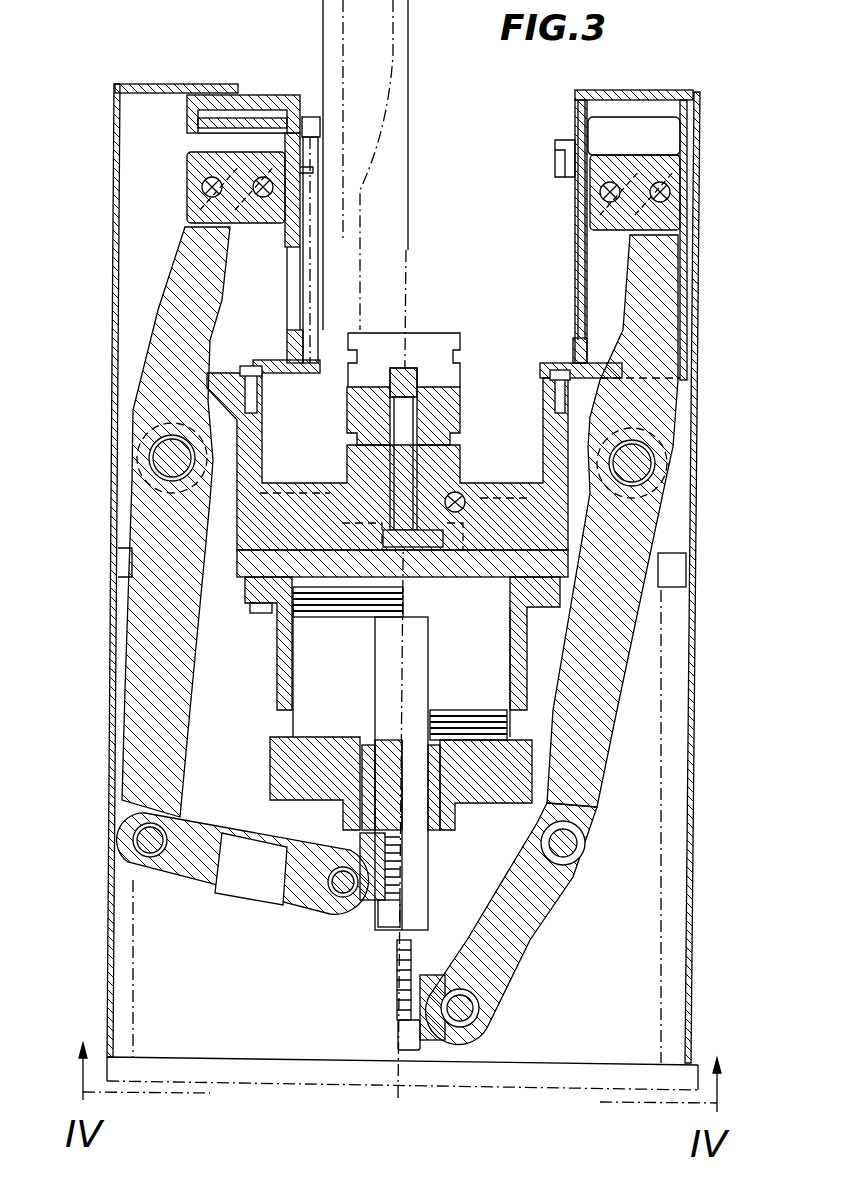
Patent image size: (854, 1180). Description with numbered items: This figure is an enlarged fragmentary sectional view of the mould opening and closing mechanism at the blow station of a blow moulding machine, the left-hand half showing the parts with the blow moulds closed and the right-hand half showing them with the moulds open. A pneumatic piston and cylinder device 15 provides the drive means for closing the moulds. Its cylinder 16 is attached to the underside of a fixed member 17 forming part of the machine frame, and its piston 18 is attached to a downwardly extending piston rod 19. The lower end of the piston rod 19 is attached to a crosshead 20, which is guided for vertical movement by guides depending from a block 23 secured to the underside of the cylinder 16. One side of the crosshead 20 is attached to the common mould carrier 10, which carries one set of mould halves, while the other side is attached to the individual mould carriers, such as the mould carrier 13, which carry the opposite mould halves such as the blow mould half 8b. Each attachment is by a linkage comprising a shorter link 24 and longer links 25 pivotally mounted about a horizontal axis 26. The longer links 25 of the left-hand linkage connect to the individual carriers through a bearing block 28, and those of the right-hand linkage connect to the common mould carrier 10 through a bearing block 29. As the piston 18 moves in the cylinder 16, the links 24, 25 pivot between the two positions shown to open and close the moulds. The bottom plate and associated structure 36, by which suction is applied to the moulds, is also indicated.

The blow mould half 8b is at (355, 44).
The common mould carrier 10 is at (578, 196).
The mould carrier 13 is at (297, 213).
The pneumatic piston and cylinder device 15 is at (275, 665).
The cylinder 16 is at (280, 690).
The fixed member 17 is at (455, 570).
The piston 18 is at (333, 603).
The piston rod 19 is at (380, 689).
The crosshead 20 is at (440, 978).
The block 23 is at (282, 773).
The shorter link 24 is at (200, 870).
The longer link 25 is at (185, 630).
The horizontal axis 26 is at (172, 458).
The bearing block 28 is at (190, 163).
The bearing block 29 is at (690, 167).
The bottom plate and associated structure 36 is at (463, 478).